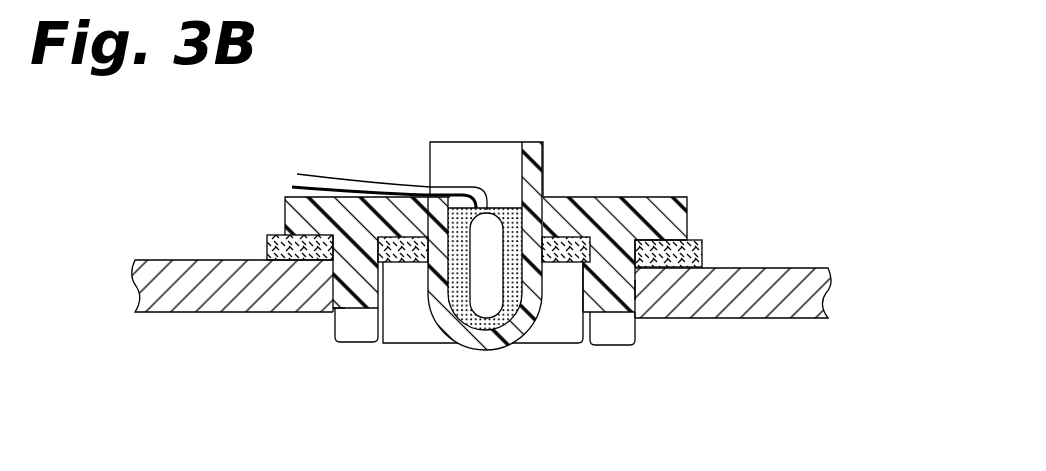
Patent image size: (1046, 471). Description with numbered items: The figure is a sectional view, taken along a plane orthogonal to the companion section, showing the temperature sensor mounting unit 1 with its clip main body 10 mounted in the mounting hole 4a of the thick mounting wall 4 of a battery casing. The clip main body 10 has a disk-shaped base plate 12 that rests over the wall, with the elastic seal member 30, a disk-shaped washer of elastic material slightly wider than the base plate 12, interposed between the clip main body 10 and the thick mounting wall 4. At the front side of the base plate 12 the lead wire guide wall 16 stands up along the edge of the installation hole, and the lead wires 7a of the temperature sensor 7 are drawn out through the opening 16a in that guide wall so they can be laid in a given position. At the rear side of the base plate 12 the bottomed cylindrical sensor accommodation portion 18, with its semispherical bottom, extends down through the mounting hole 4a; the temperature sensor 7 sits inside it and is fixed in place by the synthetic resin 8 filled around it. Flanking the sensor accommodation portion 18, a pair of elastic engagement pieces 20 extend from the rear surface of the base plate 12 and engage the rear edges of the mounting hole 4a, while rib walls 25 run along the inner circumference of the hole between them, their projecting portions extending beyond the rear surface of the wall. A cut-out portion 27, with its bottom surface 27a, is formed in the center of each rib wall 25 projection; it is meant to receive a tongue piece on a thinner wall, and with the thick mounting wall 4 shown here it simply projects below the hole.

The temperature sensor mounting unit 1 is at (608, 187).
The thick mounting wall 4 is at (793, 303).
The mounting hole 4a is at (640, 288).
The temperature sensor 7 is at (485, 310).
The lead wires 7a is at (312, 173).
The synthetic resin 8 is at (520, 347).
The clip main body 10 is at (699, 189).
The base plate 12 is at (664, 205).
The lead wire guide wall 16 is at (532, 148).
The opening 16a is at (442, 158).
The sensor accommodation portion 18 is at (468, 347).
The elastic engagement piece 20 is at (408, 327).
The rib wall 25 is at (343, 253).
The cut-out portion 27 is at (358, 332).
The bottom surface 27a is at (350, 312).
The elastic seal member 30 is at (700, 257).